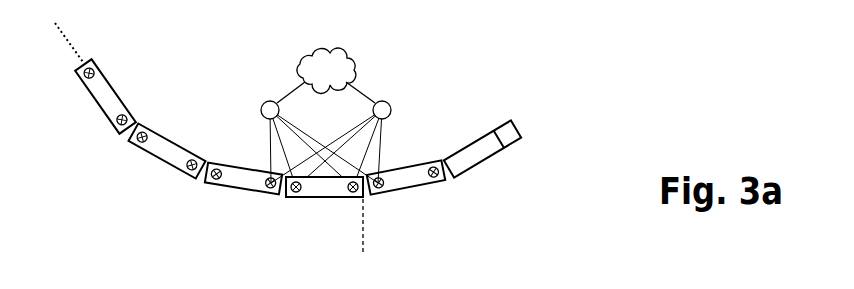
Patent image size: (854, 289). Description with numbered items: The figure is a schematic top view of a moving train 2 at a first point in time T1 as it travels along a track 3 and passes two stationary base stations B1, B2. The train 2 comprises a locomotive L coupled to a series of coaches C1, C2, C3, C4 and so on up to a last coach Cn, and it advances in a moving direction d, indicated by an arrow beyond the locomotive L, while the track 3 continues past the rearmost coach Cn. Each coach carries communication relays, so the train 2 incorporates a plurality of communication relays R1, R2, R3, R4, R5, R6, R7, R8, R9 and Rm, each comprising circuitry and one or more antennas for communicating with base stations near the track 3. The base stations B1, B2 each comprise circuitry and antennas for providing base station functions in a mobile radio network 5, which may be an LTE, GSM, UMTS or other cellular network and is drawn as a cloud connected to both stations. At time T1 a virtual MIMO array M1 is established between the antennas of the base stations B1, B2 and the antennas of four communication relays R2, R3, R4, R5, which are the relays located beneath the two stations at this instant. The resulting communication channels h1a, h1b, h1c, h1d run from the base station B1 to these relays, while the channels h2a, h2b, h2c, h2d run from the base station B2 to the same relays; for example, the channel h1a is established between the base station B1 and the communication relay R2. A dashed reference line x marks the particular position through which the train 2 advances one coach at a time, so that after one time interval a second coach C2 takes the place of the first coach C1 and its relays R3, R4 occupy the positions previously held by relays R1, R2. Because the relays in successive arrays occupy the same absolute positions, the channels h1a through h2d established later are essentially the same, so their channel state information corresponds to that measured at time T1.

The train 2 is at (324, 228).
The track 3 is at (81, 33).
The mobile radio network 5 is at (357, 62).
The MIMO array M1 is at (262, 128).
The base station B1 is at (383, 102).
The base station B2 is at (269, 102).
The point in time T1 is at (567, 197).
The locomotive L is at (482, 148).
The moving direction d is at (546, 111).
The reference position x is at (361, 235).
The coach C1 is at (408, 186).
The coach C2 is at (324, 195).
The coach C3 is at (241, 186).
The coach C4 is at (161, 159).
The coach Cn is at (98, 101).
The communication relay R1 is at (437, 182).
The communication relay R2 is at (380, 193).
The communication relay R3 is at (348, 197).
The communication relay R4 is at (297, 197).
The communication relay R5 is at (267, 193).
The communication relay R6 is at (213, 184).
The communication relay R7 is at (184, 174).
The communication relay R8 is at (134, 146).
The communication relay R9 is at (112, 126).
The communication relay Rm is at (80, 80).
The communication channel h1a is at (381, 144).
The communication channel h1b is at (361, 163).
The communication channel h1c is at (360, 128).
The communication channel h1d is at (333, 139).
The communication channel h2a is at (297, 127).
The communication channel h2b is at (300, 139).
The communication channel h2c is at (280, 146).
The communication channel h2d is at (269, 162).